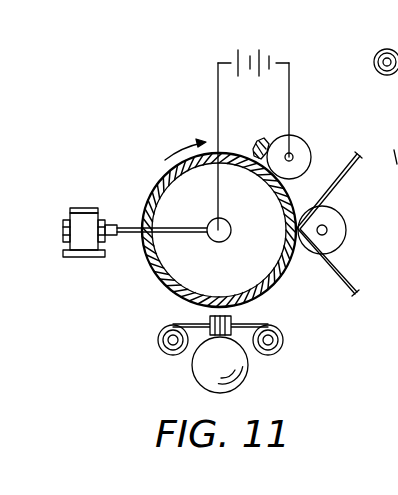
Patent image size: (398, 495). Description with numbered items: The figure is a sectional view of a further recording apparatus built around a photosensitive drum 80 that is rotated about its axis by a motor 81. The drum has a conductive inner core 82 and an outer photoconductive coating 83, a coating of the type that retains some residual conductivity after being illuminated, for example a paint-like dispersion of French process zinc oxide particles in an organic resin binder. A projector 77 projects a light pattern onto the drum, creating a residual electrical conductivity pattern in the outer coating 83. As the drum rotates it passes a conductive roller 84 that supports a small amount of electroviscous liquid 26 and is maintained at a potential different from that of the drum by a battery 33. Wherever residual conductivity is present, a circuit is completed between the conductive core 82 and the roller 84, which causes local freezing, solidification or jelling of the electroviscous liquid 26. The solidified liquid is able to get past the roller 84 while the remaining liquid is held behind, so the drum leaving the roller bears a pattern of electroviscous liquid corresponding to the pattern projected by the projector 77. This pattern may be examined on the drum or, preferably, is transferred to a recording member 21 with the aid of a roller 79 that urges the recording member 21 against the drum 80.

The recording member 21 is at (337, 277).
The electroviscous liquid 26 is at (264, 144).
The battery 33 is at (272, 52).
The projector 77 is at (248, 377).
The roller 79 is at (347, 231).
The photosensitive drum 80 is at (150, 277).
The motor 81 is at (84, 208).
The conductive inner core 82 is at (168, 193).
The outer photoconductive coating 83 is at (152, 187).
The conductive roller 84 is at (300, 136).